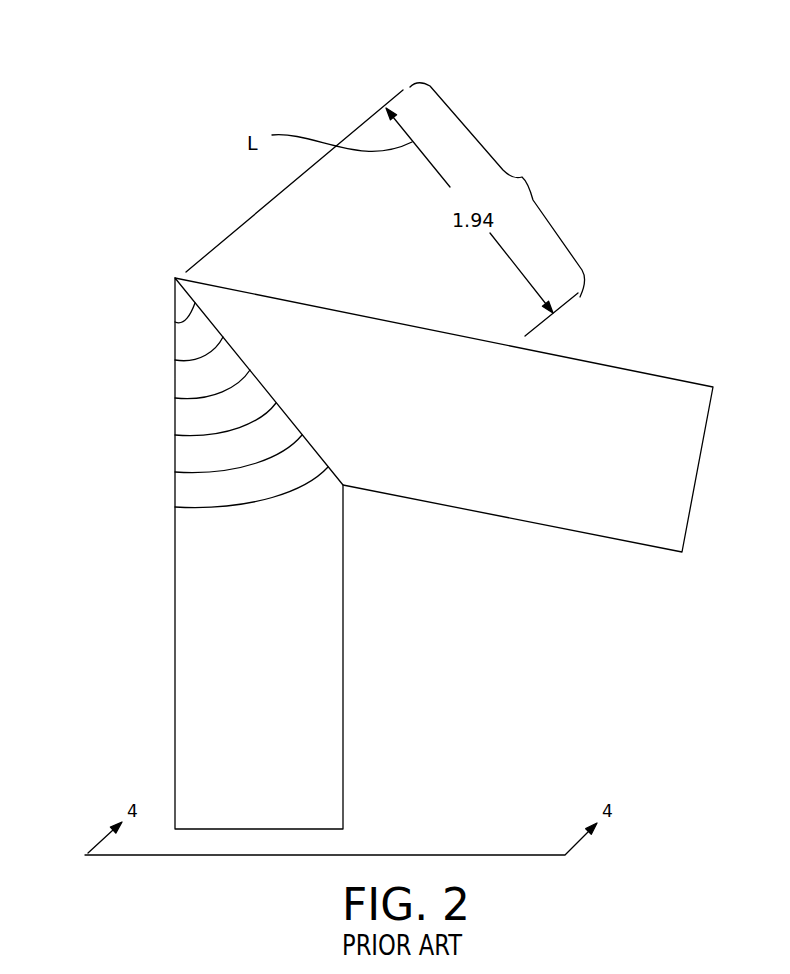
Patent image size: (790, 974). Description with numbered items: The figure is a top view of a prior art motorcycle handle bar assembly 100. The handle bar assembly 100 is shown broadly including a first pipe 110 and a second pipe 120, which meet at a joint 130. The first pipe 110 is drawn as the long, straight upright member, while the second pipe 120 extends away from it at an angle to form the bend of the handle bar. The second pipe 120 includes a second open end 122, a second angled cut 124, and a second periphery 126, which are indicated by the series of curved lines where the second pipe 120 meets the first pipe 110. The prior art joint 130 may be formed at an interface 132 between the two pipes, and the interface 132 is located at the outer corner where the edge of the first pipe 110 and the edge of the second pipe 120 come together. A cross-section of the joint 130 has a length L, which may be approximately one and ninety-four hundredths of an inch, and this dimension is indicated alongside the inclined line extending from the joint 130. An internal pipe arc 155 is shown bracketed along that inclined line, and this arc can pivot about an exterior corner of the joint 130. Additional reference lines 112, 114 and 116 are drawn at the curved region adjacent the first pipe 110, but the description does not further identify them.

The handle bar assembly 100 is at (352, 75).
The first pipe 110 is at (175, 608).
The first cutting edge arc 112 is at (175, 322).
The second cutting edge arc 114 is at (175, 360).
The third cutting edge arc 116 is at (175, 398).
The second pipe 120 is at (635, 370).
The second open end 122 is at (175, 435).
The second angled cut 124 is at (175, 472).
The second periphery 126 is at (175, 507).
The joint 130 is at (175, 278).
The interface 132 is at (175, 278).
The internal pipe arc 155 is at (523, 176).